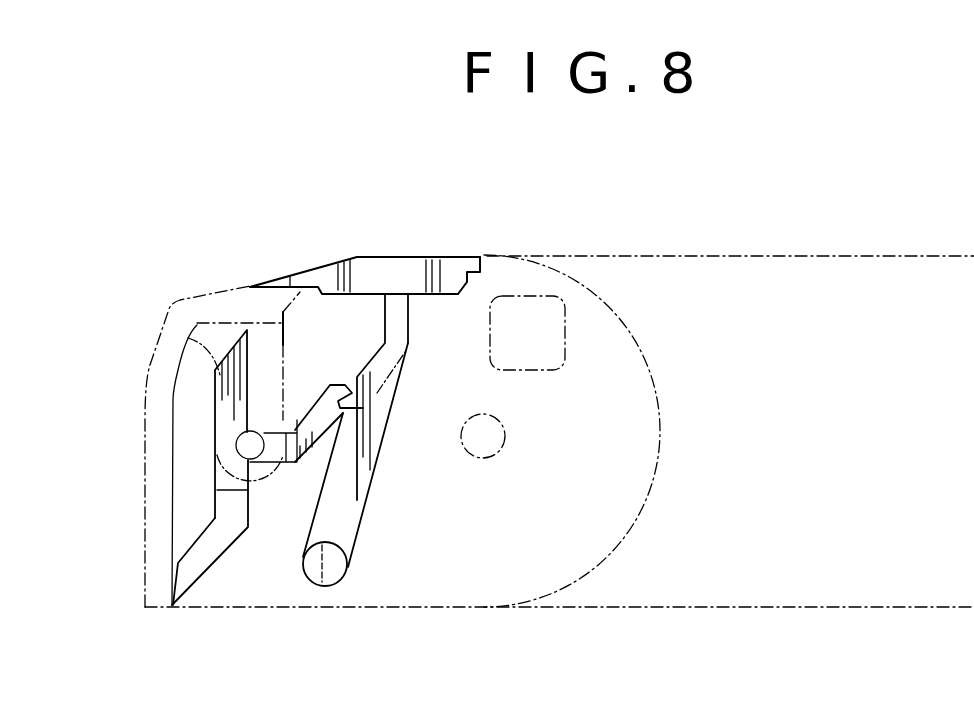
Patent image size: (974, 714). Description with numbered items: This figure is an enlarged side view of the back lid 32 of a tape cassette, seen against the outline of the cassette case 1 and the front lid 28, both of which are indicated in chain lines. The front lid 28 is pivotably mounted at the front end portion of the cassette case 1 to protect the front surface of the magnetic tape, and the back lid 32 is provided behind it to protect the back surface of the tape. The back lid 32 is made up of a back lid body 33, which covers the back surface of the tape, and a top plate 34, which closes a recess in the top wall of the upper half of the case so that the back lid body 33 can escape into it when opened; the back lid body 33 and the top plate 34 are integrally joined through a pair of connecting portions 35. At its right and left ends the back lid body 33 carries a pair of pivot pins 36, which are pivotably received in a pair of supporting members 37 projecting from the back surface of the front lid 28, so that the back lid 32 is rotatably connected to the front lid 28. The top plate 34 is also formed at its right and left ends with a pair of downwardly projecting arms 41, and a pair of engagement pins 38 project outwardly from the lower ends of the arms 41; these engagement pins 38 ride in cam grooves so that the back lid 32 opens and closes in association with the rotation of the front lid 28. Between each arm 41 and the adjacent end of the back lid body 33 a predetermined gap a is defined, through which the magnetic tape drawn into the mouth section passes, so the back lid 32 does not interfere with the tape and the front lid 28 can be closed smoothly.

The cassette case 1 is at (722, 255).
The front lid 28 is at (143, 440).
The back lid 32 is at (397, 257).
The back lid body 33 is at (225, 400).
The top plate 34 is at (457, 266).
The connecting portions 35 is at (318, 423).
The pivot pins 36 is at (247, 447).
The supporting members 37 is at (285, 340).
The engagement pins 38 is at (333, 576).
The arms 41 is at (345, 518).
The gap a is at (267, 547).